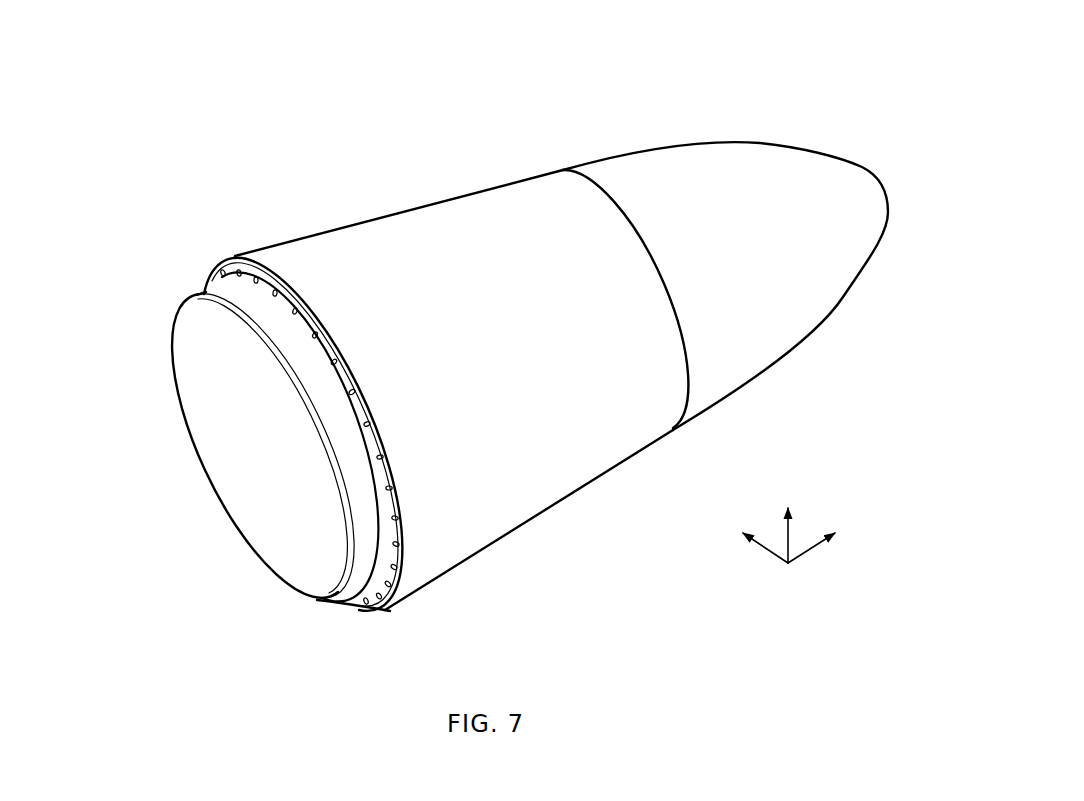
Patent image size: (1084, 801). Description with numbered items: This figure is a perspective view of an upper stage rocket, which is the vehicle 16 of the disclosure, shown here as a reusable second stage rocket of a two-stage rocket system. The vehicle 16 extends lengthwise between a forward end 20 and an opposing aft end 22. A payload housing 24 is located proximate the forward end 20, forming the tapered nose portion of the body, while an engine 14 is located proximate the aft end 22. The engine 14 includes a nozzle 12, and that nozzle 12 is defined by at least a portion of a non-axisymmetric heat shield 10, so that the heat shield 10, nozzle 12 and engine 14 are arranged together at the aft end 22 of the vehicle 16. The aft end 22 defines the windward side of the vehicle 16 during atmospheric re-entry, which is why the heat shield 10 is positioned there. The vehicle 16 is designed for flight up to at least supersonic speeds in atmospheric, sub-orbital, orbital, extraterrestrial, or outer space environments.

The non-axisymmetric heat shield 10 is at (173, 457).
The nozzle 12 is at (167, 292).
The engine 14 is at (123, 237).
The vehicle 16 is at (332, 78).
The forward end 20 is at (887, 185).
The aft end 22 is at (253, 517).
The payload housing 24 is at (710, 157).